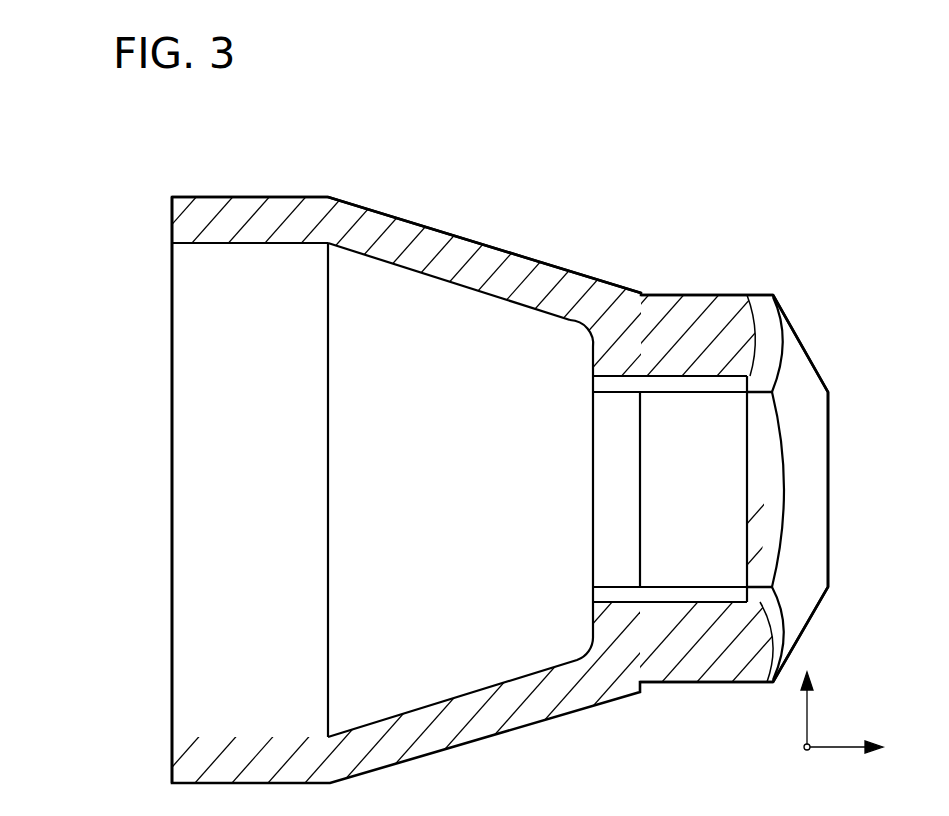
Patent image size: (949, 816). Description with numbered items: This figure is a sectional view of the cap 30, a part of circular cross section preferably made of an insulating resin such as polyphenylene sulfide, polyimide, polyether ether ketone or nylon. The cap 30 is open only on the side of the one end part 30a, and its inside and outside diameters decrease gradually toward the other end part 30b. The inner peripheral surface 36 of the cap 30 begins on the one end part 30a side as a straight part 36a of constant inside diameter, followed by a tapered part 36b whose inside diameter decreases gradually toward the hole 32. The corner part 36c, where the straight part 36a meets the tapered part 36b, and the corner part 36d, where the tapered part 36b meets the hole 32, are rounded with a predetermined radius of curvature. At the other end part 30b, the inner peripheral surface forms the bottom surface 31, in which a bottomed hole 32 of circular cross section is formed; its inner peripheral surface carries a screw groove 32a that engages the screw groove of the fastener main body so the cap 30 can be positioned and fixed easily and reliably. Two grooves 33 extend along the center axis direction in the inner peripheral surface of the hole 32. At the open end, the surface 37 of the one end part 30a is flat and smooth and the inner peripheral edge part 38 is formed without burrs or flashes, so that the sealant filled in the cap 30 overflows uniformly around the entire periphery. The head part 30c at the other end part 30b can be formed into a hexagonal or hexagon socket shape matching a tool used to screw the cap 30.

The cap 30 is at (496, 239).
The one end part 30a is at (200, 197).
The other end part 30b is at (830, 457).
The head part 30c is at (688, 293).
The bottom surface 31 is at (577, 627).
The hole 32 is at (620, 572).
The screw groove 32a is at (625, 400).
The groove 33 is at (627, 378).
The inner peripheral surface 36 is at (397, 265).
The straight part 36a is at (247, 243).
The tapered part 36b is at (457, 287).
The corner part 36c is at (328, 247).
The corner part 36d is at (583, 333).
The surface 37 is at (173, 220).
The inner peripheral edge part 38 is at (173, 247).